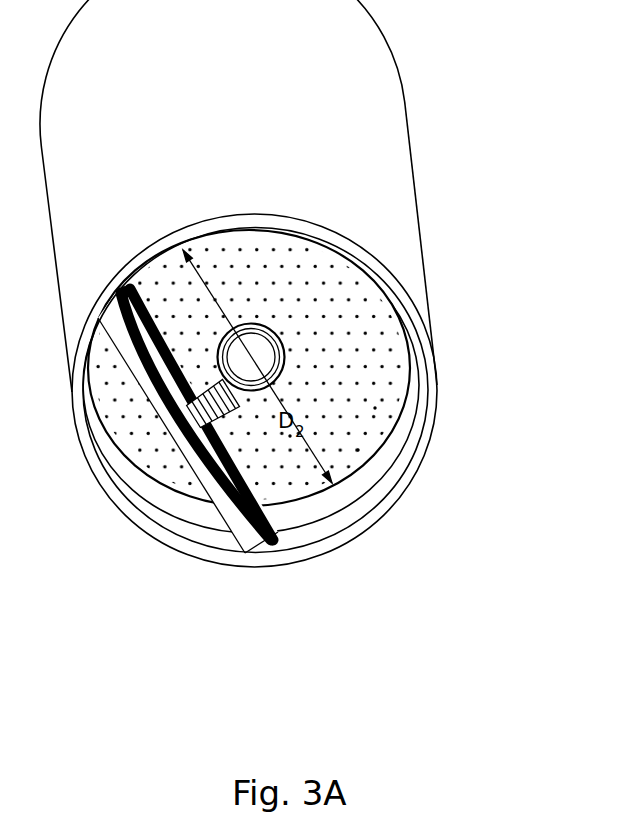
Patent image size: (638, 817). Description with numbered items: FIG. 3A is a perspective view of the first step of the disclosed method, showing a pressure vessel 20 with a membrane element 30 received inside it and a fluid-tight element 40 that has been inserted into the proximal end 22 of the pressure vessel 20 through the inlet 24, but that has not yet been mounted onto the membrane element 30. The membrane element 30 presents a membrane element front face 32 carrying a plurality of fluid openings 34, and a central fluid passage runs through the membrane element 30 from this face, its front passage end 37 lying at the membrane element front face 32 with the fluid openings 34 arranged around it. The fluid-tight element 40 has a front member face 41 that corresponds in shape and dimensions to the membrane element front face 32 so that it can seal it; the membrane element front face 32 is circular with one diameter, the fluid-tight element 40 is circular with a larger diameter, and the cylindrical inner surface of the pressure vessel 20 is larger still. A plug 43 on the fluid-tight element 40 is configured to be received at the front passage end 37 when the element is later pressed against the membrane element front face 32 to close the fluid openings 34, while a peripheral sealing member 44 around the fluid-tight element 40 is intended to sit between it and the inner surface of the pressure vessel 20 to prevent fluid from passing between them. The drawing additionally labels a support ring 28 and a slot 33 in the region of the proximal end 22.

The pressure vessel 20 is at (396, 216).
The proximal end 22 is at (313, 222).
The inlet 24 is at (202, 228).
The support ring 28 is at (118, 460).
The membrane element 30 is at (223, 262).
The membrane element front face 32 is at (375, 408).
The slot 33 is at (152, 330).
The fluid openings 34 is at (358, 450).
The front passage end 37 is at (247, 325).
The fluid-tight element 40 is at (157, 353).
The front member face 41 is at (232, 468).
The plug 43 is at (290, 436).
The peripheral sealing member 44 is at (233, 470).